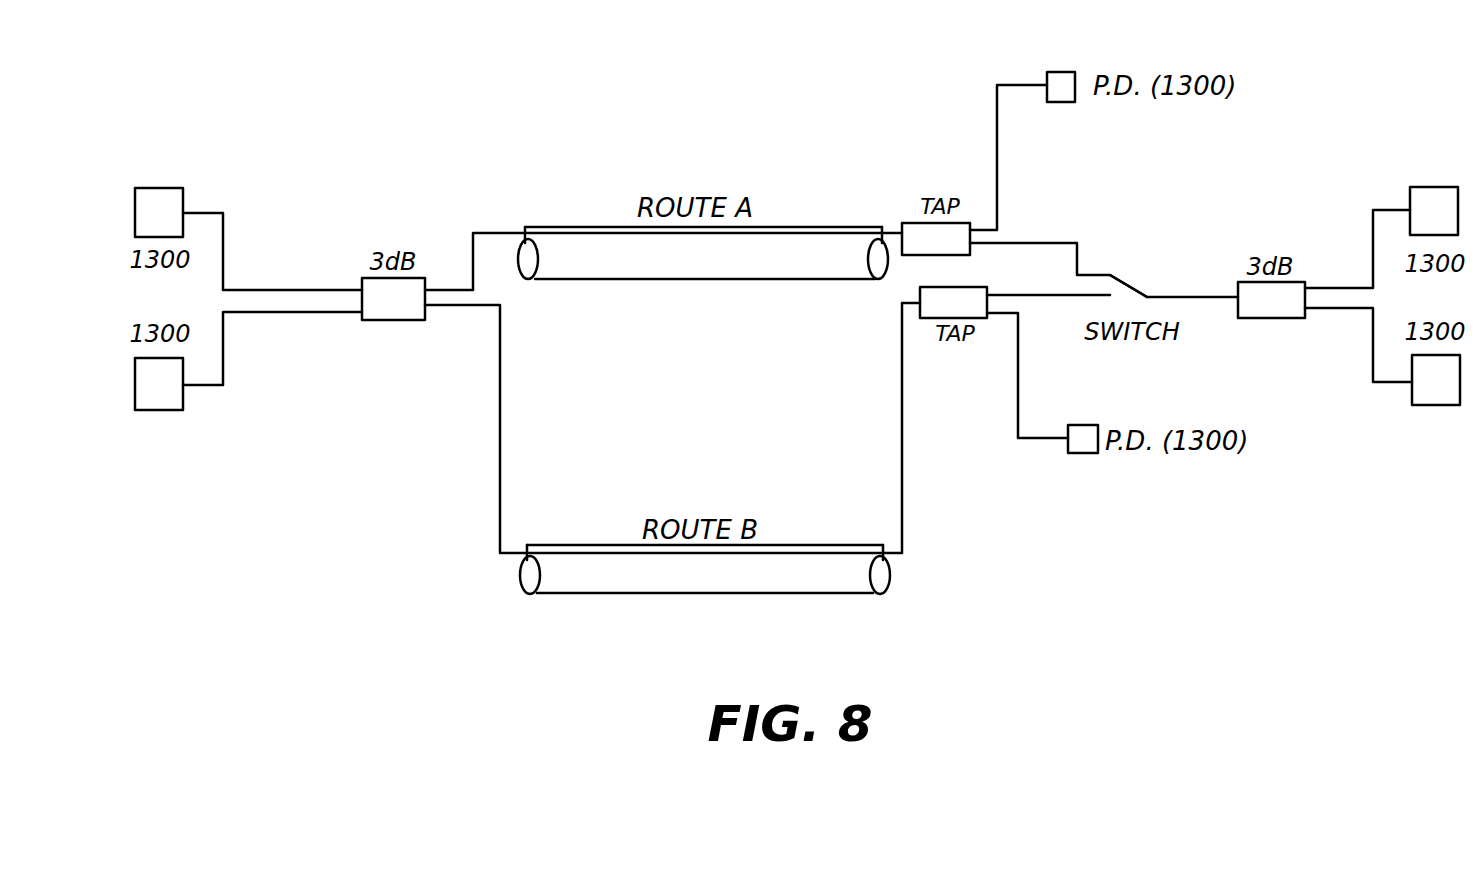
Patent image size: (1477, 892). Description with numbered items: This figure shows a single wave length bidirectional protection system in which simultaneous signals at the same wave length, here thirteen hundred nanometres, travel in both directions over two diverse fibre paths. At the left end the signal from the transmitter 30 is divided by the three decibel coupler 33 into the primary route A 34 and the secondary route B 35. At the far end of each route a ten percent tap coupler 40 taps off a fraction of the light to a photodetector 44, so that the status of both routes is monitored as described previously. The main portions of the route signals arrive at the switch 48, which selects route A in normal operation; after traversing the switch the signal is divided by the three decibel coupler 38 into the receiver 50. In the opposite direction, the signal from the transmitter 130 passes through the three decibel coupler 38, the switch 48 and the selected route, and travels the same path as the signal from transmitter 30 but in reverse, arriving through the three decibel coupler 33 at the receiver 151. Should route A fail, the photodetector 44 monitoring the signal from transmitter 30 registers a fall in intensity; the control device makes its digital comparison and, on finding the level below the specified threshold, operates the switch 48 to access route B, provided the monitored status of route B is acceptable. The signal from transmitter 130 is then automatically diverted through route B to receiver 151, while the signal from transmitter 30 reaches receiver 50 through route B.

The 1300 nm transmitter 30 is at (155, 188).
The receiver 151 is at (158, 410).
The 3 dB coupler 33 is at (393, 299).
The route A 34 is at (703, 253).
The route B 35 is at (705, 569).
The 10 percent EWBC coupler 40 is at (944, 270).
The photodetector 44 is at (1060, 72).
The switch 48 is at (1143, 293).
The 3 dB coupler 38 is at (1271, 300).
The receiver 50 is at (1437, 187).
The transmitter 130 is at (1437, 405).